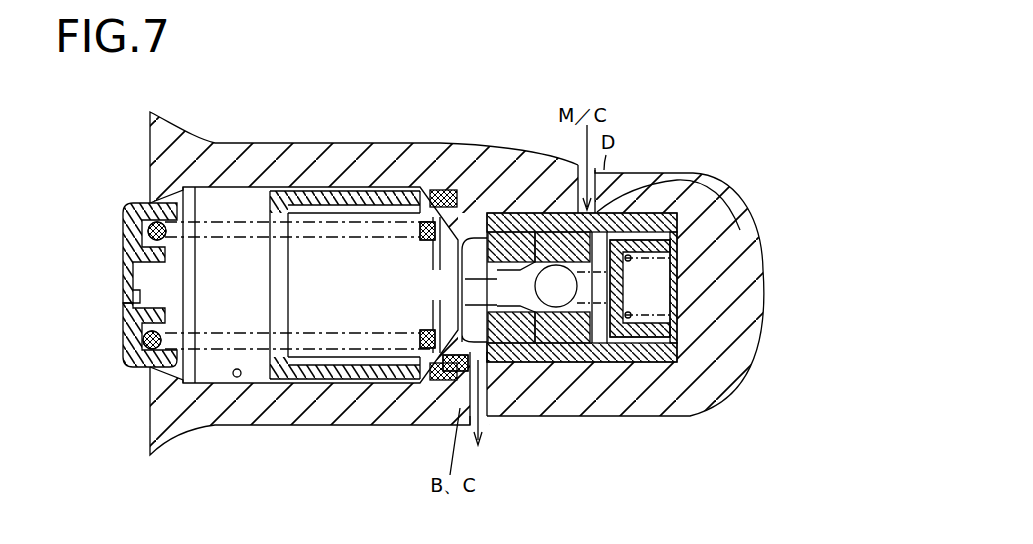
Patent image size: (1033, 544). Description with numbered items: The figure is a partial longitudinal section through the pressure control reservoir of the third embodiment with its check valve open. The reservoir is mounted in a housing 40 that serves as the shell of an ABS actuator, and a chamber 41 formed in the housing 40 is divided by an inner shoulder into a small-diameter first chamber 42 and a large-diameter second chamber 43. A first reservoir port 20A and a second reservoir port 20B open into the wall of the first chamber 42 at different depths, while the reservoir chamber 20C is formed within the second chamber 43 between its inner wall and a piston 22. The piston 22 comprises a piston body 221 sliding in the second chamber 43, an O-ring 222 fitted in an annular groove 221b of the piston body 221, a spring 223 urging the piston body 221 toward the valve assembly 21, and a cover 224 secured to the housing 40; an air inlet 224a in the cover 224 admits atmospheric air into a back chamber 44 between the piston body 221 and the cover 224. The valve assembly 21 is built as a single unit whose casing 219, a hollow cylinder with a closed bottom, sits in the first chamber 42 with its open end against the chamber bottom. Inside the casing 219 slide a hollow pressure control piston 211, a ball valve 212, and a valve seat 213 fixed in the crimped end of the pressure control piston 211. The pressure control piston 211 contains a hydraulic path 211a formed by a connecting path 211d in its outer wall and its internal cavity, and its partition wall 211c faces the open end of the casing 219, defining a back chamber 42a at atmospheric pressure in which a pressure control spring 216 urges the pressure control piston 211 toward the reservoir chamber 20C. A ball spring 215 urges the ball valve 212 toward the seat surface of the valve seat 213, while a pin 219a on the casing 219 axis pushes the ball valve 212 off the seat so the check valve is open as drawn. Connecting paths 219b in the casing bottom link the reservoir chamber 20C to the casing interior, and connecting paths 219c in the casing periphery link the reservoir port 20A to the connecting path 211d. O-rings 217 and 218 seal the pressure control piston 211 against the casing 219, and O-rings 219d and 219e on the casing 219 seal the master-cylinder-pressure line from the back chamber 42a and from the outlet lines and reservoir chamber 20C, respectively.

The housing 40 is at (743, 340).
The chamber 41 is at (240, 185).
The first chamber 42 is at (732, 358).
The back chamber 42a is at (655, 282).
The second chamber 43 is at (237, 378).
The back chamber 44 is at (217, 263).
The valve assembly 21 is at (705, 400).
The piston 22 is at (283, 386).
The piston body 221 is at (308, 385).
The annular groove 221b is at (453, 420).
The O-ring 222 is at (430, 362).
The spring 223 is at (142, 348).
The cover 224 is at (123, 236).
The air inlet 224a is at (128, 298).
The pressure control piston 211 is at (623, 365).
The hydraulic path 211a is at (640, 365).
The partition wall 211c is at (690, 248).
The connecting path 211d is at (700, 179).
The ball valve 212 is at (560, 367).
The valve seat 213 is at (593, 352).
The ball spring 215 is at (607, 367).
The pressure control spring 216 is at (677, 298).
The O-ring 217 is at (677, 367).
The O-ring 218 is at (590, 352).
The casing 219 is at (687, 222).
The pin 219a is at (483, 217).
The connecting paths 219b is at (437, 190).
The connecting paths 219c is at (630, 197).
The O-ring 219d is at (653, 192).
The O-ring 219e is at (502, 225).
The reservoir port 20A is at (533, 215).
The reservoir port 20B is at (490, 380).
The reservoir chamber 20C is at (385, 385).